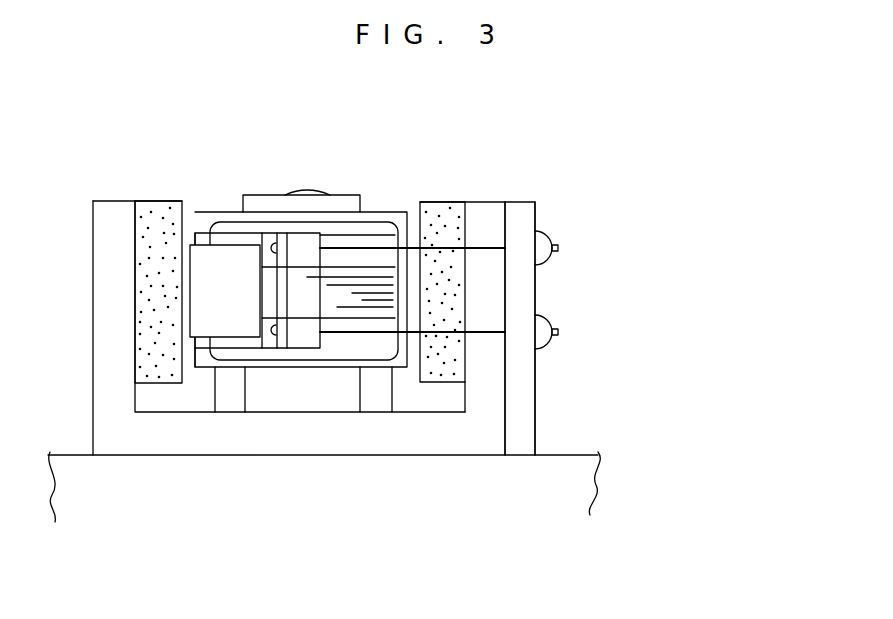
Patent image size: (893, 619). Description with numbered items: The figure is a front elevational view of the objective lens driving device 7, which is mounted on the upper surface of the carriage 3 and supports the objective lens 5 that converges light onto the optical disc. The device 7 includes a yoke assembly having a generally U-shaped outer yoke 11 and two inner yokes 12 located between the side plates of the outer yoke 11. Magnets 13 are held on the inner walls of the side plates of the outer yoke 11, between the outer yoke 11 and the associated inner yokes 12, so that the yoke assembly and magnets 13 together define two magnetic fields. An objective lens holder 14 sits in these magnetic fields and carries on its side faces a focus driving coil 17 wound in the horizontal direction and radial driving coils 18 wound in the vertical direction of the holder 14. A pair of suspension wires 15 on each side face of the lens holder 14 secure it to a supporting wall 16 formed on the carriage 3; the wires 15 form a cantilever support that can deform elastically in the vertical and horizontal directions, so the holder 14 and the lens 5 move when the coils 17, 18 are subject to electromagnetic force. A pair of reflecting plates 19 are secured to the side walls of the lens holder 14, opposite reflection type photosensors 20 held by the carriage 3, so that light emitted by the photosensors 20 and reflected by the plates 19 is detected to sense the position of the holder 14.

The carriage 3 is at (596, 493).
The objective lens 5 is at (307, 190).
The objective lens driving device 7 is at (64, 166).
The outer yoke 11 is at (435, 438).
The inner yokes 12 is at (377, 390).
The magnets 13 is at (147, 207).
The objective lens holder 14 is at (370, 212).
The suspension wires 15 is at (487, 330).
The supporting wall 16 is at (520, 410).
The focus driving coil 17 is at (302, 287).
The radial driving coils 18 is at (388, 223).
The reflecting plates 19 is at (213, 350).
The reflection type photosensors 20 is at (187, 300).